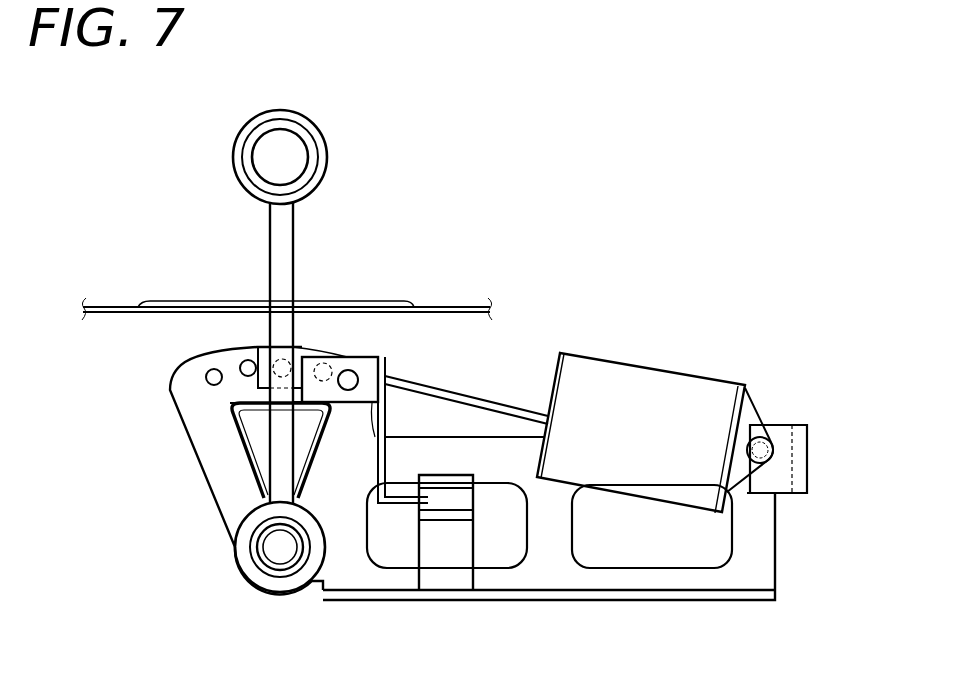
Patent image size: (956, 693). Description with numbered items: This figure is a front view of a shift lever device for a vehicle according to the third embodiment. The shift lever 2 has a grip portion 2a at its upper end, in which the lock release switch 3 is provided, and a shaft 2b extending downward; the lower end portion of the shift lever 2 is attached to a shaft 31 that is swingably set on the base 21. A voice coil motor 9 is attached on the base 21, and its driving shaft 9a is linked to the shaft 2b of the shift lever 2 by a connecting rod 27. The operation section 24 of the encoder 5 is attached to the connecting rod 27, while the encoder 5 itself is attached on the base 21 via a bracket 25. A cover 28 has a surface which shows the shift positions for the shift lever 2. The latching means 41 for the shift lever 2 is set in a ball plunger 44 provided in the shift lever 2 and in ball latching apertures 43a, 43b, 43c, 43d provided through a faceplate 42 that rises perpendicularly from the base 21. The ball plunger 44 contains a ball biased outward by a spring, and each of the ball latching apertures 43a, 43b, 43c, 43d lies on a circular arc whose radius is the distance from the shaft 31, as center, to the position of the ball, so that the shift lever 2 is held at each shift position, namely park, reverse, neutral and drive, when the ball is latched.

The shift lever 2 is at (279, 291).
The grip portion 2a is at (247, 124).
The shaft 2b is at (268, 218).
The lock release switch 3 is at (300, 157).
The encoder 5 is at (473, 478).
The voice coil motor 9 is at (648, 368).
The driving shaft 9a is at (524, 388).
The base 21 is at (627, 602).
The operation section 24 is at (378, 470).
The bracket 25 is at (445, 577).
The connecting rod 27 is at (373, 341).
The cover 28 is at (470, 305).
The shaft 31 is at (275, 552).
The latching means 41 is at (227, 416).
The faceplate 42 is at (478, 436).
The ball latching aperture 43a is at (372, 400).
The ball latching aperture 43b is at (282, 359).
The ball latching aperture 43c is at (248, 360).
The ball latching aperture 43d is at (214, 368).
The ball plunger 44 is at (257, 383).